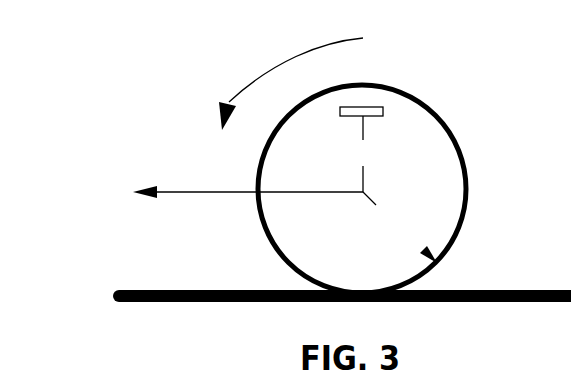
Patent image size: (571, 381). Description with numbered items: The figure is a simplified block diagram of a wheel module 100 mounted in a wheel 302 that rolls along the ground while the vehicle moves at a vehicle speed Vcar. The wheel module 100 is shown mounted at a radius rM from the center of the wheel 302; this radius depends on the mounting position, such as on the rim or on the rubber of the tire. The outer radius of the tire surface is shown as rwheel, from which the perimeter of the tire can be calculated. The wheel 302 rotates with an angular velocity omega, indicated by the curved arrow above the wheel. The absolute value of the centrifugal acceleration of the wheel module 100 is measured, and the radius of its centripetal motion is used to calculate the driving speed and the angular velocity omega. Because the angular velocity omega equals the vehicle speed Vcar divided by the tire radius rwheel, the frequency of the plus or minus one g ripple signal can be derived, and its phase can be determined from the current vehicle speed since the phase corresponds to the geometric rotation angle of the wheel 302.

The wheel module 100 is at (358, 107).
The wheel 302 is at (467, 165).
The radius of wheel module rM is at (361, 154).
The vehicle speed Vcar is at (248, 206).
The angular velocity omega is at (291, 76).
The radius of the tire surface rwheel is at (400, 227).